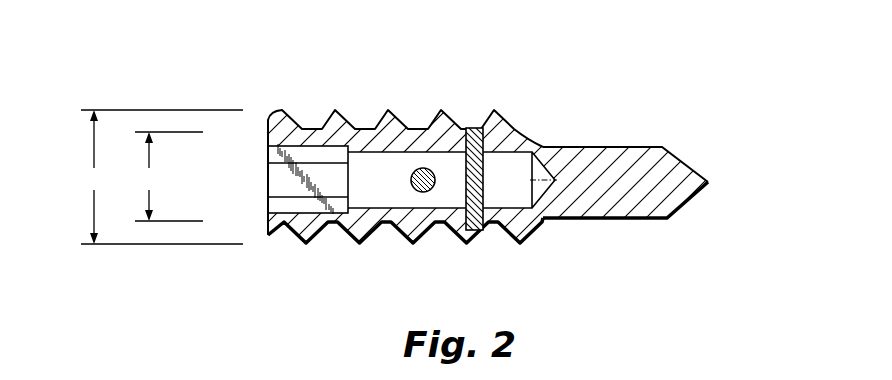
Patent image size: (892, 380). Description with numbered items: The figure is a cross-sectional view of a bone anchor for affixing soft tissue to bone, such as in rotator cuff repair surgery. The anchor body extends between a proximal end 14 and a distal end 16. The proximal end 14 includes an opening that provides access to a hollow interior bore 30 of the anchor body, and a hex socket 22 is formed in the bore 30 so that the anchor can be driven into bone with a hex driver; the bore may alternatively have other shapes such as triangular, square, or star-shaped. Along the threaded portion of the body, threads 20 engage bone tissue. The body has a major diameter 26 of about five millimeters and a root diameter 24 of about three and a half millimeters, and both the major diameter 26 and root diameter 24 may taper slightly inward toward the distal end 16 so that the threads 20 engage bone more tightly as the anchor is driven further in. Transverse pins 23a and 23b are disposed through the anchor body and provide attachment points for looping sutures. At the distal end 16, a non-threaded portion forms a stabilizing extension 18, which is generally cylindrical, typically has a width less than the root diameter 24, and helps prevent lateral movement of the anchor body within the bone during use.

The proximal end 14 is at (267, 128).
The distal end 16 is at (481, 163).
The stabilizing extension 18 is at (603, 148).
The threads 20 is at (386, 128).
The hex socket 22 is at (305, 153).
The root diameter 24 is at (169, 176).
The major diameter 26 is at (162, 177).
The hollow interior bore 30 is at (264, 179).
The transverse pin 23a is at (478, 232).
The transverse pin 23b is at (414, 189).